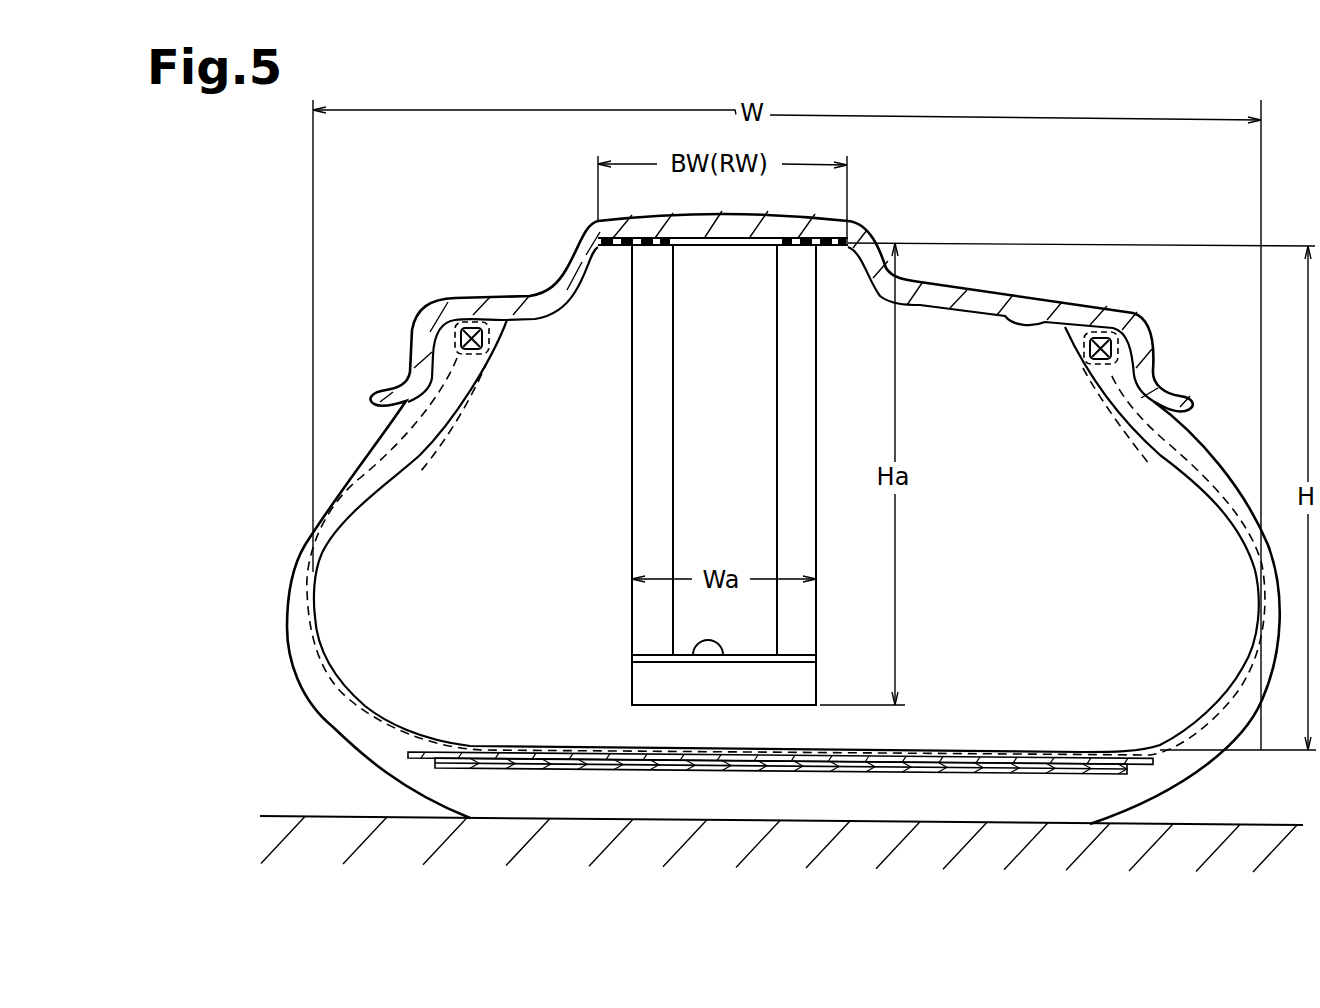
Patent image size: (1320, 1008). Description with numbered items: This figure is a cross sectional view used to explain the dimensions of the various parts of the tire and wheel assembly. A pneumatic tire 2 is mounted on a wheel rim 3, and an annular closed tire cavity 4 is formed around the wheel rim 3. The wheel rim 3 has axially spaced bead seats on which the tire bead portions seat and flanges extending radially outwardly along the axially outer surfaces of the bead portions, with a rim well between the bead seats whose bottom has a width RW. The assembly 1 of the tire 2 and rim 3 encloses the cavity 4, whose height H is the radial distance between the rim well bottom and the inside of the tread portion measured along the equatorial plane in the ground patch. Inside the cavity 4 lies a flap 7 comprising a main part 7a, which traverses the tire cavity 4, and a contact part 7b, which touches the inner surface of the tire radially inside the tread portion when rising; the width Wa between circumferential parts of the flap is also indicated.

The pneumatic tire 1 is at (226, 300).
The pneumatic tire 2 is at (349, 432).
The wheel rim 3 is at (385, 336).
The tire cavity 4 is at (498, 576).
The flap 7 is at (572, 893).
The main part 7a is at (640, 623).
The contact part 7b is at (700, 650).